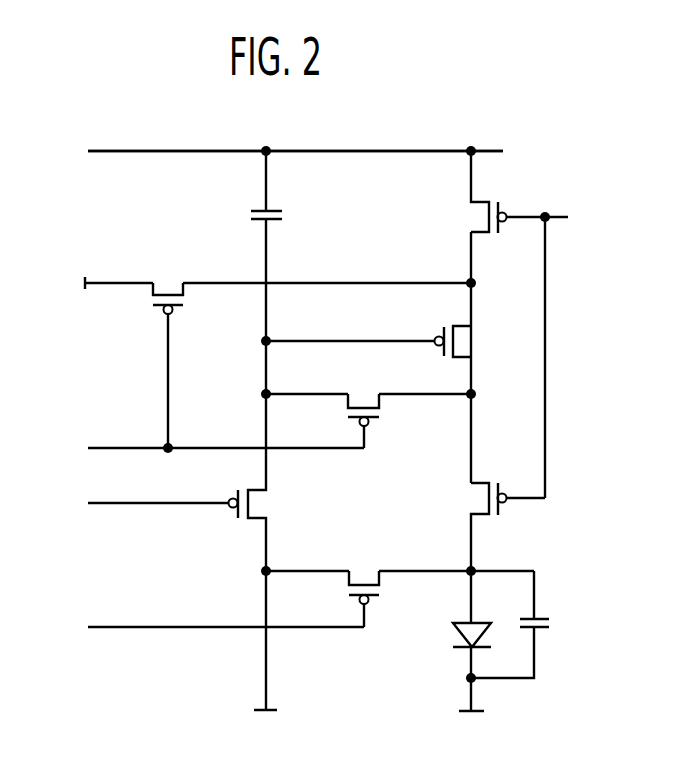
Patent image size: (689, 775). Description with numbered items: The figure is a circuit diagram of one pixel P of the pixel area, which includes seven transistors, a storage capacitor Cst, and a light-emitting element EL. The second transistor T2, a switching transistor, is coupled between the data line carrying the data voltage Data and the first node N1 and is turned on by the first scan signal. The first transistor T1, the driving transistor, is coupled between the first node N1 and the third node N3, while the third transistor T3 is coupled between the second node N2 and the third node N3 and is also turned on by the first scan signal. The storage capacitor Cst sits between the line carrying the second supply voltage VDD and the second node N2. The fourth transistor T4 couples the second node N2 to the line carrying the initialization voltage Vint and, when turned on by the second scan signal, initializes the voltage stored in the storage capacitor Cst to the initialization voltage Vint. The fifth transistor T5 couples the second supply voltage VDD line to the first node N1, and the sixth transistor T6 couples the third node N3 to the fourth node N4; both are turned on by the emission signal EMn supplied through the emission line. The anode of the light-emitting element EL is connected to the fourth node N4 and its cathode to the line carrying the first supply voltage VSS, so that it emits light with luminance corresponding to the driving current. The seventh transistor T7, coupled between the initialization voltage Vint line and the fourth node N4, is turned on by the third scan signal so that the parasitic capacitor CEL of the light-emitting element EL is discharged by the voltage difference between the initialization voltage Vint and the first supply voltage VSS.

The pixel P is at (561, 121).
The second supply voltage VDD is at (295, 138).
The storage capacitor Cst is at (249, 217).
The data voltage Data is at (96, 283).
The first transistor T1 is at (466, 341).
The second transistor T2 is at (168, 350).
The third transistor T3 is at (363, 406).
The fourth transistor T4 is at (259, 482).
The fifth transistor T5 is at (496, 192).
The sixth transistor T6 is at (497, 526).
The seventh transistor T7 is at (364, 584).
The first node N1 is at (342, 313).
The second node N2 is at (347, 338).
The third node N3 is at (382, 431).
The fourth node N4 is at (397, 559).
The emission signal EMn is at (575, 350).
The initialization voltage Vint is at (269, 658).
The light-emitting element EL is at (459, 624).
The parasitic capacitor CEL is at (528, 627).
The first supply voltage VSS is at (472, 711).